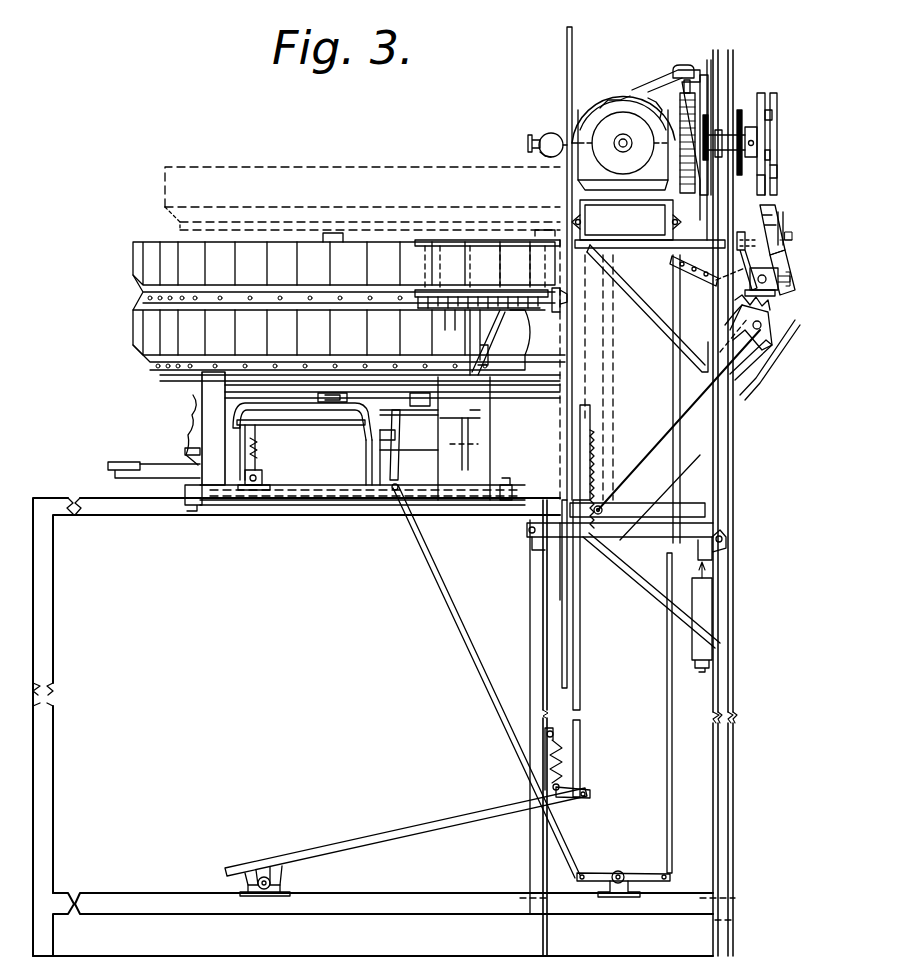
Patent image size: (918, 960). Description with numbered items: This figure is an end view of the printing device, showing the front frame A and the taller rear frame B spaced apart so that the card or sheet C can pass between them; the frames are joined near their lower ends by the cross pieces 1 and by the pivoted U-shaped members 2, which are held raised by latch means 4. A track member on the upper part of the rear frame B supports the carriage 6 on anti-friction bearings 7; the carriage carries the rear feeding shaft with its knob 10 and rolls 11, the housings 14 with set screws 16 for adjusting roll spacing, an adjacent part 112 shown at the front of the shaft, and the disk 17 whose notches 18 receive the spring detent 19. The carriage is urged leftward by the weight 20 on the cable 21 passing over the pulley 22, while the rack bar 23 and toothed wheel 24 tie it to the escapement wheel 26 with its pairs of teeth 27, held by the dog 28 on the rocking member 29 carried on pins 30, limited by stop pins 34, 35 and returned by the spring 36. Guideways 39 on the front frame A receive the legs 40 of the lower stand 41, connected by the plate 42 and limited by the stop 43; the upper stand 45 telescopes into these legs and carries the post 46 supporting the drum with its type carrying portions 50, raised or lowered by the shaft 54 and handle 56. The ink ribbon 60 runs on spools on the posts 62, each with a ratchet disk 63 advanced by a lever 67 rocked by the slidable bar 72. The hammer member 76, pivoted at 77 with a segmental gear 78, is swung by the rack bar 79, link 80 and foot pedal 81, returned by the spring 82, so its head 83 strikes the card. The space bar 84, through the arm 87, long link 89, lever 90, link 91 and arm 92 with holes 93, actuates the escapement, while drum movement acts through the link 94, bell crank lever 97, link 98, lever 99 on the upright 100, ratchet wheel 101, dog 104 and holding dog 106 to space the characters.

The cross pieces 1 is at (596, 915).
The U-shaped members 2 is at (648, 540).
The latch means 4 is at (520, 538).
The carriage 6 is at (695, 150).
The anti-friction bearings 7 is at (650, 220).
The knob 10 is at (623, 138).
The disks or rolls 11 is at (609, 95).
The housings 14 is at (553, 140).
The set screw 16 is at (526, 138).
The disk 17 is at (612, 105).
The notches 18 is at (607, 110).
The spring detent 19 is at (662, 99).
The weight 20 is at (712, 608).
The cable 21 is at (718, 462).
The pulley 22 is at (717, 132).
The rack bar 23 is at (688, 72).
The toothed wheel 24 is at (704, 92).
The escapement wheel 26 is at (770, 138).
The pairs of teeth 27 is at (762, 92).
The pivoted dog 28 is at (760, 212).
The member 29 is at (770, 262).
The pins 30 is at (775, 292).
The adjustable stop pin 34 is at (742, 240).
The adjustable stop pin 35 is at (786, 232).
The spring 36 is at (765, 306).
The guideways 39 is at (370, 482).
The legs 40 is at (208, 396).
The lower stand 41 is at (385, 392).
The bar or plate 42 is at (290, 505).
The adjustable stop 43 is at (510, 493).
The upper stand 45 is at (424, 396).
The post 46 is at (335, 240).
The type carrying portions 50 is at (133, 325).
The shaft 54 is at (435, 438).
The handle 56 is at (188, 456).
The ink ribbon 60 is at (498, 258).
The posts 62 is at (480, 470).
The ratchet disk 63 is at (566, 300).
The lever 67 is at (492, 358).
The bar 72 is at (478, 445).
The hammer member 76 is at (616, 376).
The pivot 77 is at (620, 490).
The segmental gear 78 is at (610, 452).
The rack bar 79 is at (584, 404).
The link 80 is at (583, 692).
The foot pedal 81 is at (420, 812).
The spring 82 is at (565, 757).
The head 83 is at (748, 350).
The space bar 84 is at (110, 465).
The arm 87 is at (320, 505).
The long link 89 is at (465, 660).
The lever 90 is at (644, 875).
The link 91 is at (668, 816).
The arm 92 is at (684, 278).
The holes 93 is at (676, 268).
The link 94 is at (400, 462).
The bell crank lever 97 is at (360, 440).
The link 98 is at (252, 452).
The lever 99 is at (248, 418).
The upright 100 is at (258, 464).
The ratchet wheel 101 is at (186, 438).
The dog 104 is at (195, 413).
The holding dog 106 is at (250, 490).
The collar 112 is at (545, 152).
The front frame A is at (45, 853).
The rear frame B is at (732, 582).
The card or sheet C is at (571, 90).